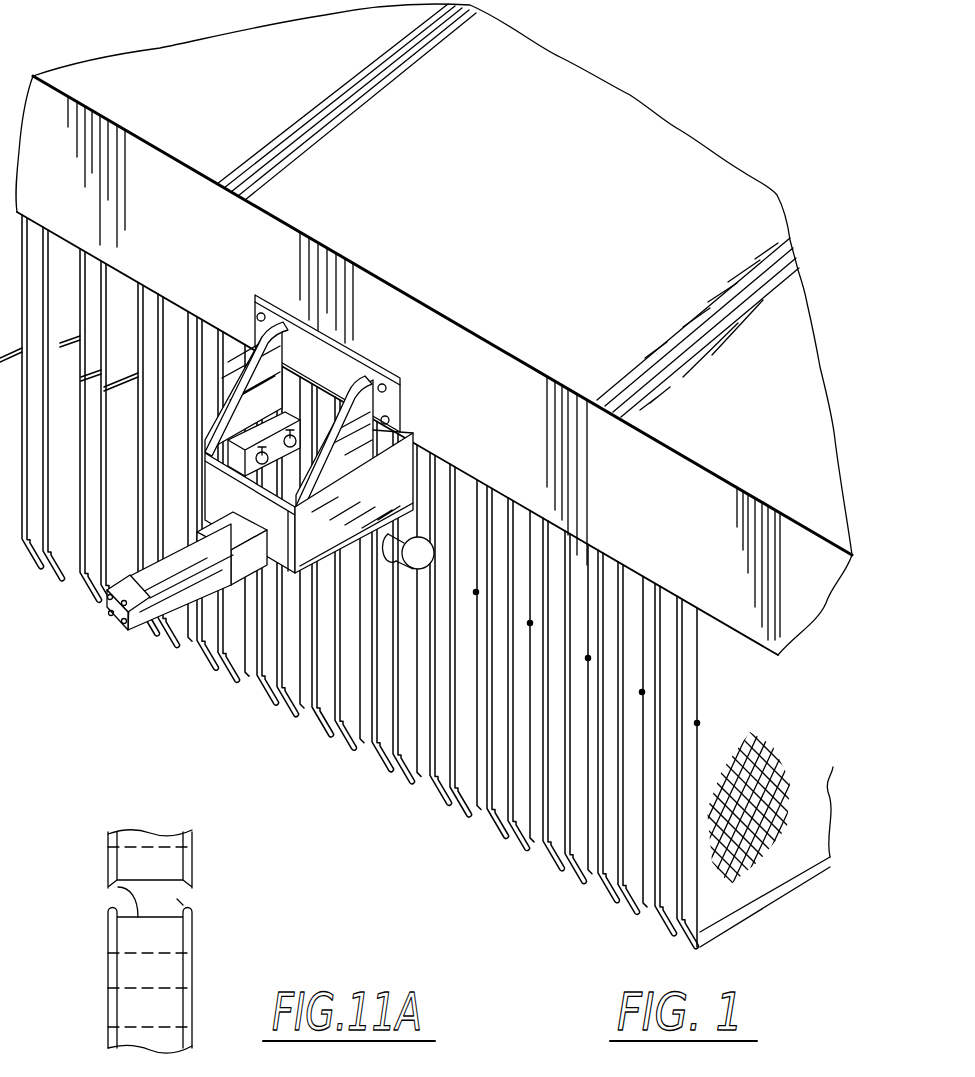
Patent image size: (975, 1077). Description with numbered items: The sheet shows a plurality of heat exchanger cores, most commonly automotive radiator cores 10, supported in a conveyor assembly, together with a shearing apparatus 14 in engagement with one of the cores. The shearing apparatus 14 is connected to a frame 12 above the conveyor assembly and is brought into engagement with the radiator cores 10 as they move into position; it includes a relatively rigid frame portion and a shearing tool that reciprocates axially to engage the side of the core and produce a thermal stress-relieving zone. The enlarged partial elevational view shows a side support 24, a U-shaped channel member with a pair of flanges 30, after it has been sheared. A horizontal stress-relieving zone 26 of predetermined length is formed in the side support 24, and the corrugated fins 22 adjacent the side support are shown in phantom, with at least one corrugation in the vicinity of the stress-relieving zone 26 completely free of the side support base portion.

In FIG. 1, the radiator core 10 is at (68, 562).
In FIG. 1, the frame 12 is at (622, 321).
In FIG. 1, the shearing apparatus 14 is at (416, 384).
In FIG. 11A, the corrugated fins 22 is at (162, 842).
In FIG. 11A, the side support 24 is at (196, 1020).
In FIG. 11A, the stress-relieving zone 26 is at (161, 896).
In FIG. 11A, the flanges 30 is at (108, 850).